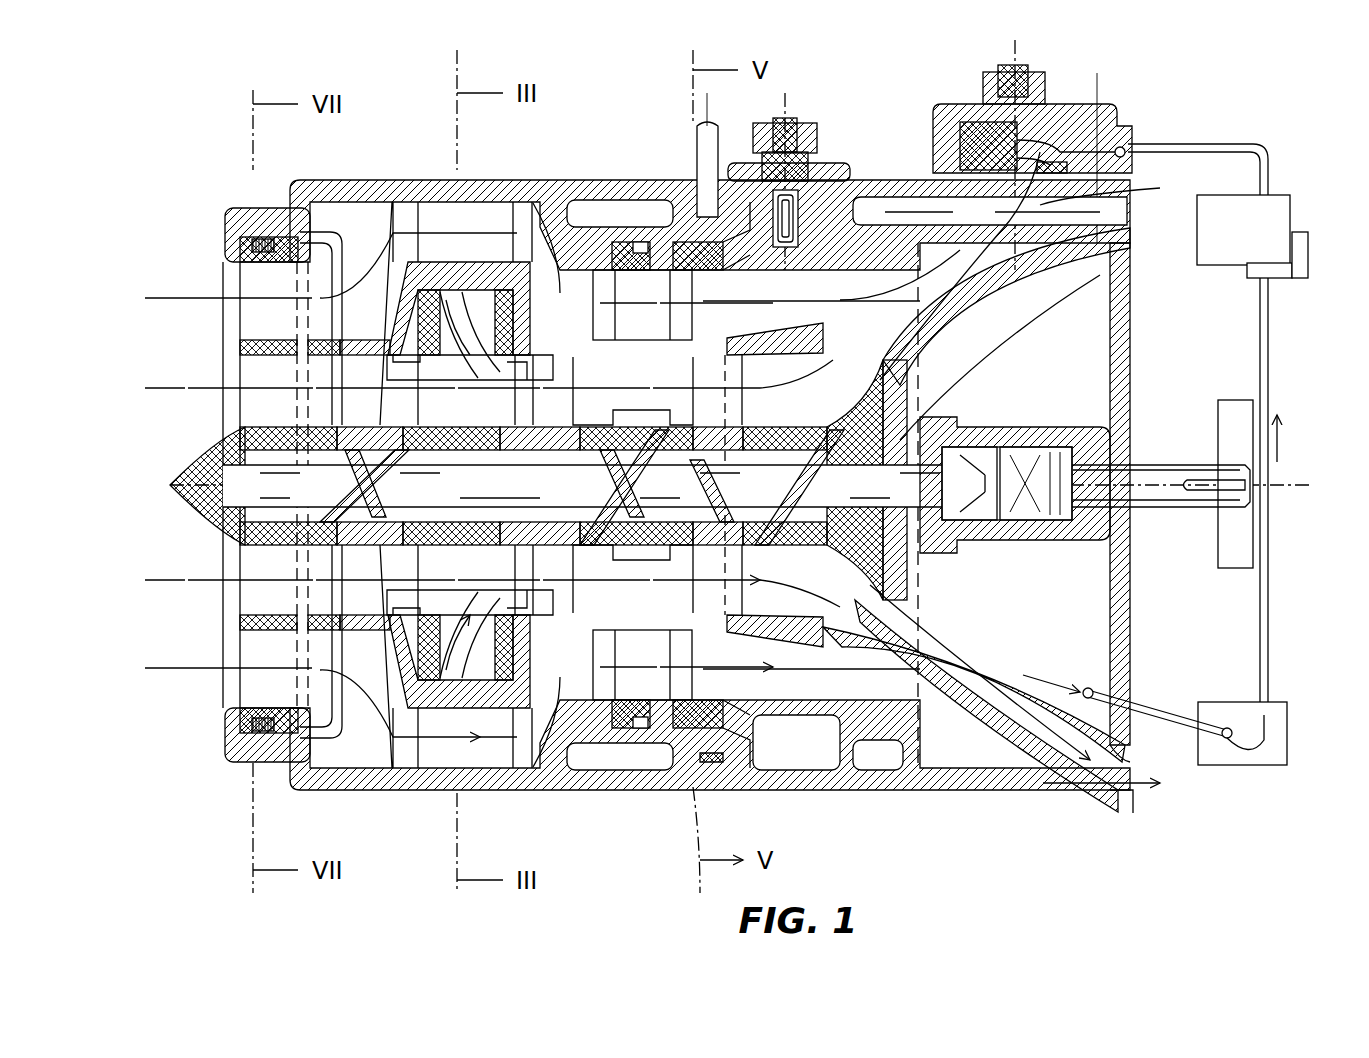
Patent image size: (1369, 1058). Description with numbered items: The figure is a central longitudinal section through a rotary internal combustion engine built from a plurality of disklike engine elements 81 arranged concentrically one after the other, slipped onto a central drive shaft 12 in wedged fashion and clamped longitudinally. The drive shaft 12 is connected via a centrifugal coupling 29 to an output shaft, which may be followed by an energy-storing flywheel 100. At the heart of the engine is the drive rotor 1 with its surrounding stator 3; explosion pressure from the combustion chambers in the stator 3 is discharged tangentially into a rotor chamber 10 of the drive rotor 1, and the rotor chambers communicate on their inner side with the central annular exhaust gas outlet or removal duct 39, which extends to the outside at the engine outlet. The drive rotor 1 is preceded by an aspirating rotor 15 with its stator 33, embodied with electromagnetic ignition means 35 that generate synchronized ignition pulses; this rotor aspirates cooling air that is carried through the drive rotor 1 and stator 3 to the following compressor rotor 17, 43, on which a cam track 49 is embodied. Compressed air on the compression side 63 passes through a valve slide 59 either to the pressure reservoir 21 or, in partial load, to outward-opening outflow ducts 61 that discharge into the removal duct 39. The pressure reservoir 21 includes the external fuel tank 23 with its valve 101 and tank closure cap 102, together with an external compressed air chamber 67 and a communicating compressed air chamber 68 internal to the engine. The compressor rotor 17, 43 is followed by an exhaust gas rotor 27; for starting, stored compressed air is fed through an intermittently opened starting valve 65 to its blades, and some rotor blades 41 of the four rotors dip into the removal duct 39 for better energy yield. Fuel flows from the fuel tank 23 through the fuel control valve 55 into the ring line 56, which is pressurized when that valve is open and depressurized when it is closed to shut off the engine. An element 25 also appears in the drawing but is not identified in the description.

The drive rotor 1 is at (427, 262).
The stator 3 is at (493, 270).
The rotor chamber 10 is at (465, 484).
The drive shaft 12 is at (1173, 497).
The aspirating rotor 15 is at (240, 348).
The compressor rotor 17 is at (653, 243).
The pressure reservoir 21 is at (1247, 703).
The fuel tank 23 is at (1210, 231).
The housing cavity 25 is at (600, 768).
The exhaust gas rotor 27 is at (817, 392).
The centrifugal coupling 29 is at (1063, 460).
The stator 33 is at (250, 230).
The electromagnetic ignition means 35 is at (250, 251).
The exhaust gas outlet or removal duct 39 is at (655, 482).
The rotor blades 41 is at (230, 538).
The compressor rotor 43 is at (638, 262).
The cam track 49 is at (640, 728).
The fuel control valve 55 is at (1097, 117).
The ring line 56 is at (870, 752).
The valve slide 59 is at (722, 740).
The outflow ducts 61 is at (770, 680).
The compression side 63 is at (690, 570).
The starting valve 65 is at (793, 220).
The external compressed air chamber 67 is at (1218, 703).
The compressed air chamber 68 is at (780, 757).
The disklike engine elements 81 is at (1007, 790).
The flywheel 100 is at (1230, 405).
The valve 101 is at (1278, 273).
The tank closure cap 102 is at (1300, 247).